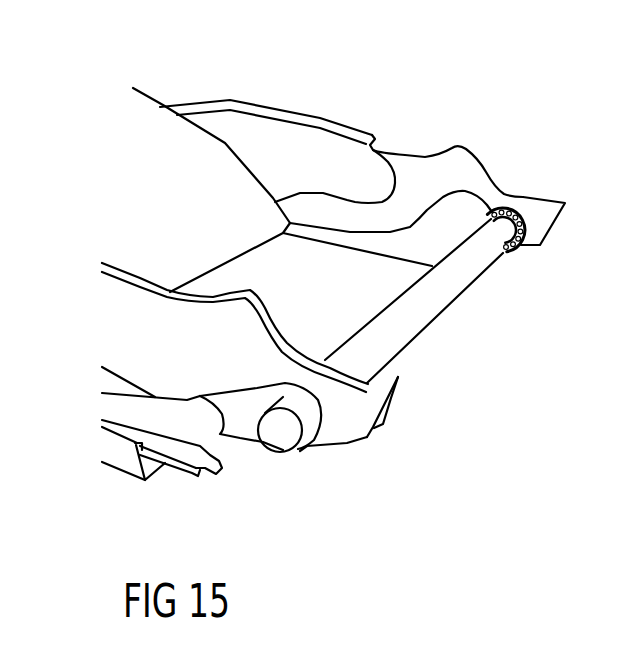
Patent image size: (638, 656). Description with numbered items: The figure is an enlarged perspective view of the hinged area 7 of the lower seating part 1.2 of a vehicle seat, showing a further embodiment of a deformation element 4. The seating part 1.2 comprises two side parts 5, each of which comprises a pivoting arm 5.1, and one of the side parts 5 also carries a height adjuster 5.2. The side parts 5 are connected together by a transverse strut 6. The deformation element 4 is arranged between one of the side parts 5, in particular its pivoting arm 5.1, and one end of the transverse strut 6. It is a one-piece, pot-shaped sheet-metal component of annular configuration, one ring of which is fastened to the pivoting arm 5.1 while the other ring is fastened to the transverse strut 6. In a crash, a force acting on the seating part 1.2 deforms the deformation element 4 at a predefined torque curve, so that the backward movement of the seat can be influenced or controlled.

The height adjuster 5.2 is at (257, 117).
The seating part 1.2 is at (298, 194).
The pivoting arm 5.1 is at (435, 210).
The side part 5 is at (458, 158).
The hinged area 7 is at (519, 196).
The deformation element 4 is at (513, 250).
The transverse strut 6 is at (398, 337).